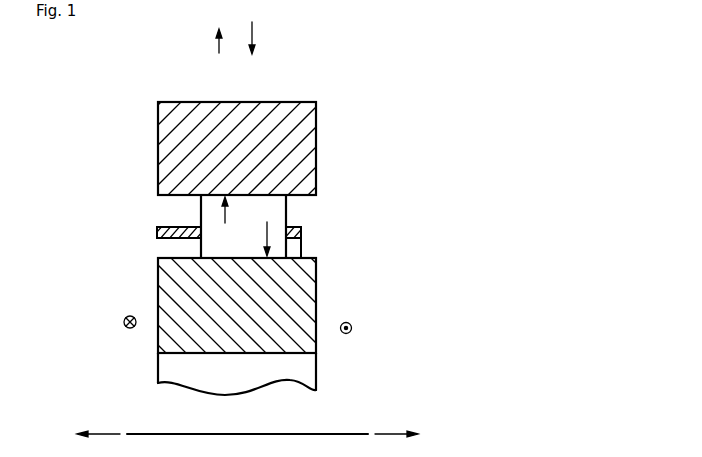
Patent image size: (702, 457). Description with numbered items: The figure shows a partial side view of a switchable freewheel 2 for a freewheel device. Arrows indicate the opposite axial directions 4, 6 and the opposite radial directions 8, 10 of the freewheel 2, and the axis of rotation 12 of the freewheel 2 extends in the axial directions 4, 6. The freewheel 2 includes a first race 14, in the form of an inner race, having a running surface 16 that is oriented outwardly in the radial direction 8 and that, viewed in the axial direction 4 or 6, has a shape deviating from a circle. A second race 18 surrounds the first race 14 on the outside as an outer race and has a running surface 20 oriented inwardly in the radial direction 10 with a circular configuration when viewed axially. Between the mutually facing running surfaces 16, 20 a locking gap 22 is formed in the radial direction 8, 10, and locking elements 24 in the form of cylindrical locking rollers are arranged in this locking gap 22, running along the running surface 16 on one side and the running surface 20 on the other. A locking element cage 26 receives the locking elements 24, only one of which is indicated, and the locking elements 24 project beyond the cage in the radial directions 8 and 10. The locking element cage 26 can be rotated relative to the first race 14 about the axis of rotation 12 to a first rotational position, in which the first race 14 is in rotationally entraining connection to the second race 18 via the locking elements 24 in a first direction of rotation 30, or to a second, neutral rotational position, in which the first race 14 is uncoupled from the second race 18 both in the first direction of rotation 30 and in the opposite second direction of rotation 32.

The switchable freewheel 2 is at (336, 90).
The axial direction 4 is at (390, 434).
The axial direction 6 is at (105, 434).
The radial direction 8 is at (219, 44).
The radial direction 10 is at (252, 32).
The axis of rotation 12 is at (312, 434).
The first race 14 is at (300, 298).
The running surface 16 is at (267, 224).
The second race 18 is at (187, 122).
The running surface 20 is at (225, 223).
The locking gap 22 is at (308, 235).
The locking elements 24 is at (248, 220).
The locking element cage 26 is at (160, 232).
The first direction of rotation 30 is at (352, 328).
The second direction of rotation 32 is at (123, 322).